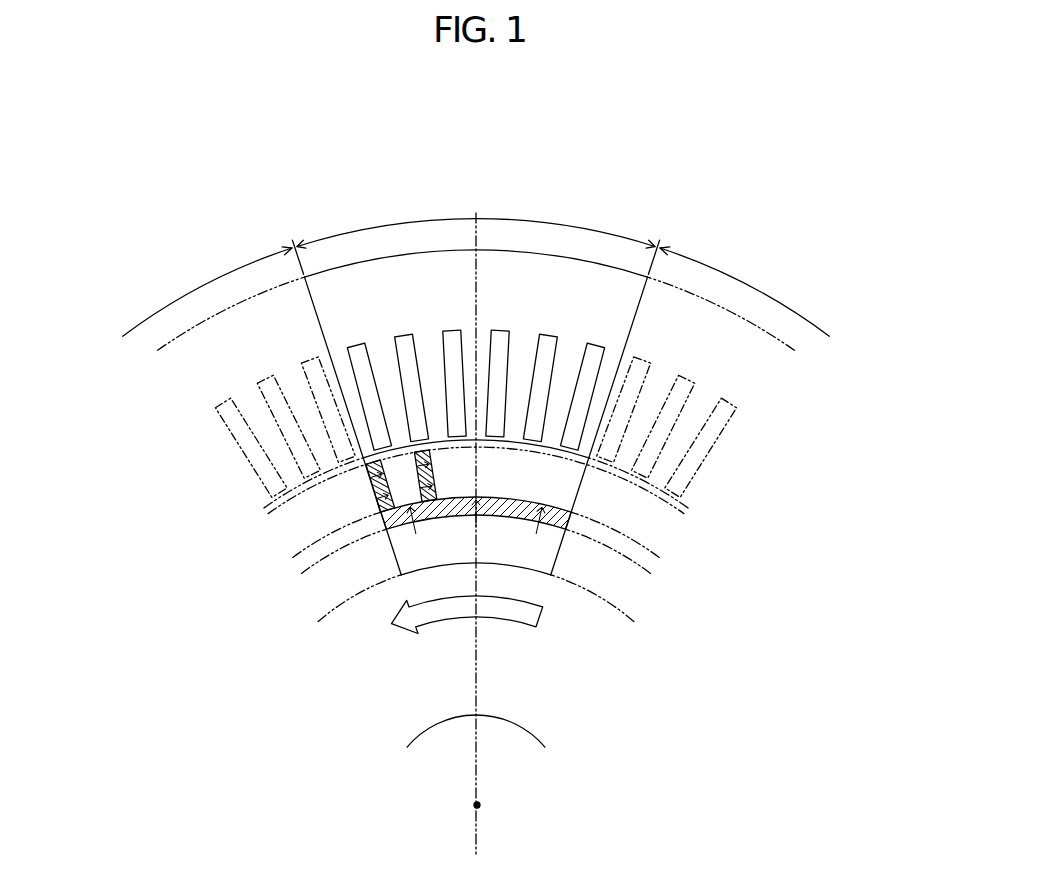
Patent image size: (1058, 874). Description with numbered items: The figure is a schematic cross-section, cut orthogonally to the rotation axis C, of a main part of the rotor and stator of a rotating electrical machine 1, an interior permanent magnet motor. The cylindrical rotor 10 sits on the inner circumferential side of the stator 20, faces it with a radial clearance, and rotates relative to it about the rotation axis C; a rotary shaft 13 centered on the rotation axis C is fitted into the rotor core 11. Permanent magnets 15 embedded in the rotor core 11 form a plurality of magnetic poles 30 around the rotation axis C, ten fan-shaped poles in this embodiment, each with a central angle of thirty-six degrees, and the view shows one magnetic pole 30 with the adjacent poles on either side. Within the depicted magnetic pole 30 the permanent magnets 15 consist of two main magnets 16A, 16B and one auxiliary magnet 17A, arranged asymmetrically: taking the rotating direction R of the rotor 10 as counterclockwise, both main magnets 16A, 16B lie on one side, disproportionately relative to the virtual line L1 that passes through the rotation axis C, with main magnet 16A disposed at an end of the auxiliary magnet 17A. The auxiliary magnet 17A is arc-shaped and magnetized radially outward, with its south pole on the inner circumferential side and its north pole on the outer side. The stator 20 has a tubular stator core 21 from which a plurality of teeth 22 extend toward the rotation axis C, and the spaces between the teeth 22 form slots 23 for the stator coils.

The rotating electrical machine 1 is at (313, 172).
The rotor 10 is at (575, 573).
The rotor core 11 is at (392, 578).
The rotary shaft 13 is at (518, 740).
The permanent magnets 15 is at (293, 500).
The main magnet 16A is at (387, 478).
The main magnet 16B is at (437, 485).
The auxiliary magnet 17A is at (395, 530).
The stator 20 is at (368, 262).
The stator core 21 is at (330, 305).
The teeth 22 is at (555, 435).
The slots 23 is at (597, 348).
The magnetic pole 30 is at (586, 239).
The rotating direction R is at (442, 610).
The virtual line L1 is at (478, 678).
The rotation axis C is at (482, 805).